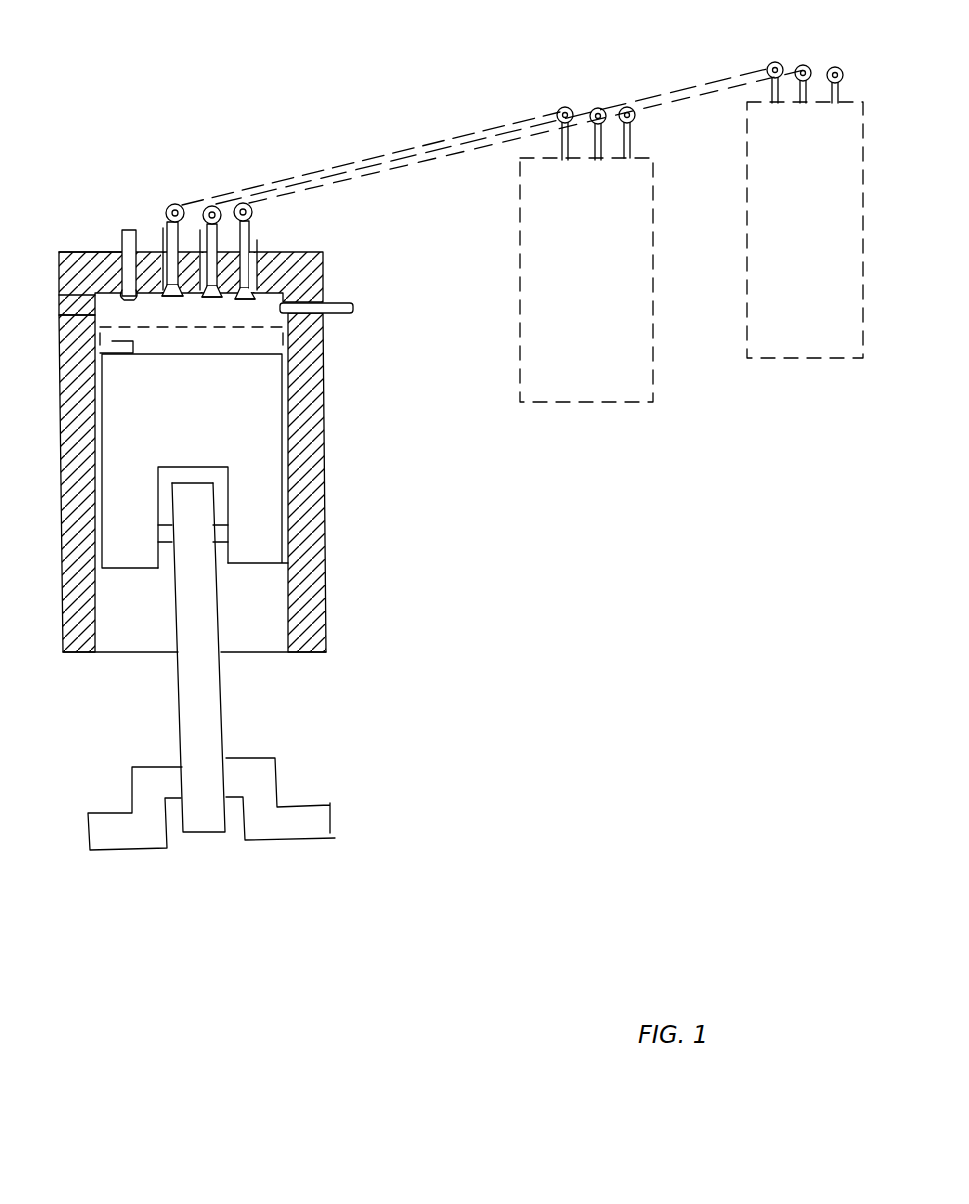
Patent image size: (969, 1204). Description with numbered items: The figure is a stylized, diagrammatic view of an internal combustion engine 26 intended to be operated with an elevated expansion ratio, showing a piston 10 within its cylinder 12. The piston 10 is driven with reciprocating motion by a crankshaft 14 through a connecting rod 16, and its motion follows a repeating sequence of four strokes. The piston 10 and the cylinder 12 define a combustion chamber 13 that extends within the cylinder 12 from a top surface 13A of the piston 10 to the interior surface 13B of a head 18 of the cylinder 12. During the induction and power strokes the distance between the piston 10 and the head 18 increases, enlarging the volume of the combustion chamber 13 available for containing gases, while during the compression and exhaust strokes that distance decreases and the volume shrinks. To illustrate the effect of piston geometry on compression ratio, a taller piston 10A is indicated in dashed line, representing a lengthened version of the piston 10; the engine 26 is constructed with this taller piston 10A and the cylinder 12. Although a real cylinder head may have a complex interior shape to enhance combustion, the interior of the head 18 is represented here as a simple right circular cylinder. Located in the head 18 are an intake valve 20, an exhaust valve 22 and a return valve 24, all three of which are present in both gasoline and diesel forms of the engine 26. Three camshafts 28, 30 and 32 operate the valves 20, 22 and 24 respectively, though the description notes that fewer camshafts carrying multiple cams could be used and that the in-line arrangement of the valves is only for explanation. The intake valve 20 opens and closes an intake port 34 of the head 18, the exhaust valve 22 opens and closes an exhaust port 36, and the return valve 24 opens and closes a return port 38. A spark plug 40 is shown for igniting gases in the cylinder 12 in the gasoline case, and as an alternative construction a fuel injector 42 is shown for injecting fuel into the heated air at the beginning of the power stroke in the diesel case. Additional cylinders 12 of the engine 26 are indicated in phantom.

The piston 10 is at (123, 443).
The taller piston 10A is at (267, 335).
The cylinder 12 is at (95, 620).
The combustion chamber 13 is at (117, 313).
The top surface 13A is at (98, 354).
The interior surface 13B is at (93, 300).
The crankshaft 14 is at (277, 785).
The connecting rod 16 is at (222, 705).
The head 18 is at (85, 252).
The intake valve 20 is at (180, 300).
The exhaust valve 22 is at (222, 300).
The return valve 24 is at (253, 303).
The engine 26 is at (457, 113).
The camshaft 28 is at (172, 205).
The camshaft 30 is at (210, 205).
The camshaft 32 is at (243, 203).
The intake port 34 is at (163, 228).
The exhaust port 36 is at (200, 230).
The return port 38 is at (258, 240).
The spark plug 40 is at (122, 233).
The fuel injector 42 is at (347, 302).